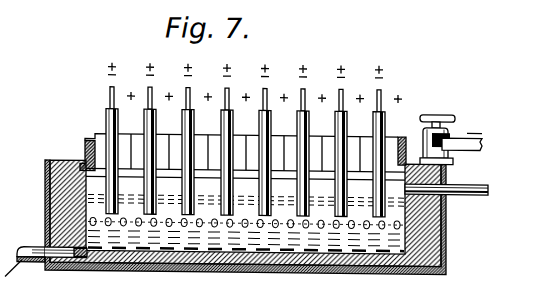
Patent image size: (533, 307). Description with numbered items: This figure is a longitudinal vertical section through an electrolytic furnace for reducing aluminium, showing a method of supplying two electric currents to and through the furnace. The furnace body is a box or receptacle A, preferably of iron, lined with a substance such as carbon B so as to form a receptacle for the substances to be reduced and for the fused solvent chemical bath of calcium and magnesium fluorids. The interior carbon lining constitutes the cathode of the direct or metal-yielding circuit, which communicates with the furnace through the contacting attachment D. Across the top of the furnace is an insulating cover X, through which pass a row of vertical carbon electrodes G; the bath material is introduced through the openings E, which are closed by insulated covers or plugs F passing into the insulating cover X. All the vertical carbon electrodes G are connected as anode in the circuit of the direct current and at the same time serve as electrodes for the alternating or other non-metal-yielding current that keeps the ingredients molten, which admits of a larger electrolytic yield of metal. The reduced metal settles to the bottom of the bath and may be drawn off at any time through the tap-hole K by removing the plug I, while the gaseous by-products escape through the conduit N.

The box or receptacle A is at (448, 228).
The carbon lining B is at (423, 246).
The contacting attachment D is at (450, 125).
The opening E is at (246, 213).
The insulated cover or plug F is at (103, 132).
The electrode G is at (156, 124).
The plug I is at (43, 250).
The tap-hole K is at (82, 260).
The conduit N is at (470, 180).
The insulating cover X is at (88, 148).